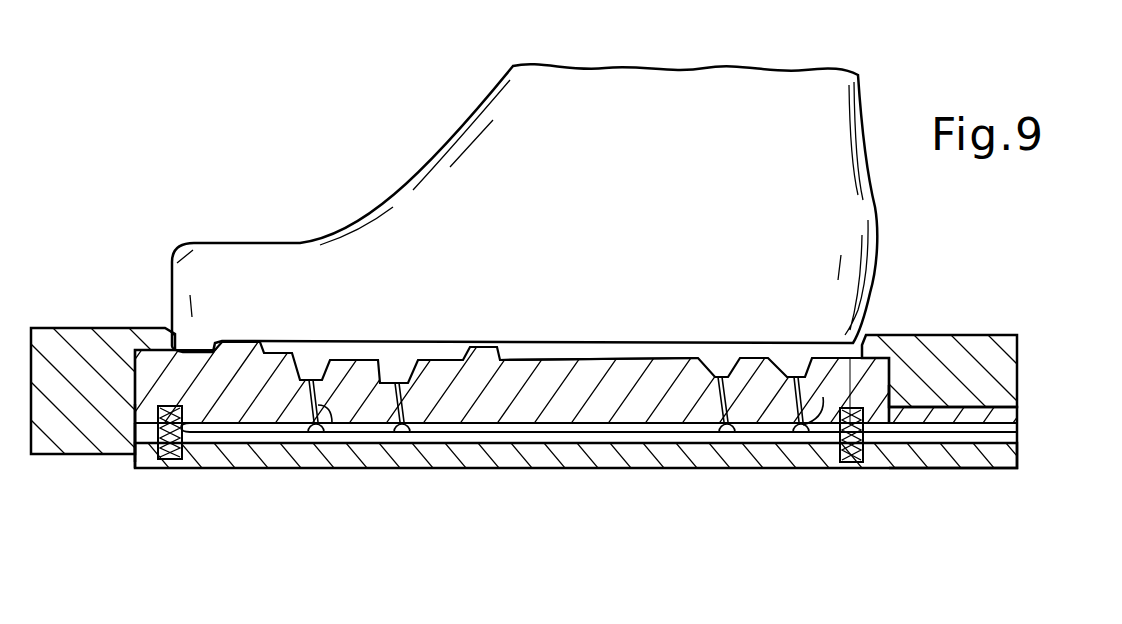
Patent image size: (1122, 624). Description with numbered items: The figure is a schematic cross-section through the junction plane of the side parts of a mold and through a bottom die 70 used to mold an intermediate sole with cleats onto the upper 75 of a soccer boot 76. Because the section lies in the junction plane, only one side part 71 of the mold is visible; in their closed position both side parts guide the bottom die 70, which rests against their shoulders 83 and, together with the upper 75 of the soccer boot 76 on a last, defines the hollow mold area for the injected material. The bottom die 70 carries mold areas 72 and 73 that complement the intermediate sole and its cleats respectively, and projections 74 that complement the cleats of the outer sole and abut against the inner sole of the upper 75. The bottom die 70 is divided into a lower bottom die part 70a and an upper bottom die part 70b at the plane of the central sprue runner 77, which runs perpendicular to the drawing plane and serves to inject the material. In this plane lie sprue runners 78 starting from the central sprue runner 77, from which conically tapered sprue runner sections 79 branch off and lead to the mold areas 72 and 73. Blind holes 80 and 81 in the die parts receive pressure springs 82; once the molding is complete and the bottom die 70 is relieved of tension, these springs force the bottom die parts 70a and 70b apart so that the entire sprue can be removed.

The bottom die 70 is at (651, 467).
The lower bottom die part 70a is at (985, 460).
The upper bottom die part 70b is at (870, 373).
The side part of the mold 71 is at (1019, 392).
The mold area 72 is at (447, 345).
The mold area 73 is at (322, 345).
The projection 74 is at (488, 345).
The upper 75 is at (220, 280).
The soccer boot 76 is at (371, 206).
The central sprue runner 77 is at (1002, 440).
The sprue runner 78 is at (403, 434).
The conically tapered sprue runner section 79 is at (323, 422).
The blind hole 80 is at (162, 465).
The blind hole 81 is at (133, 469).
The pressure spring 82 is at (173, 460).
The shoulder 83 is at (170, 343).